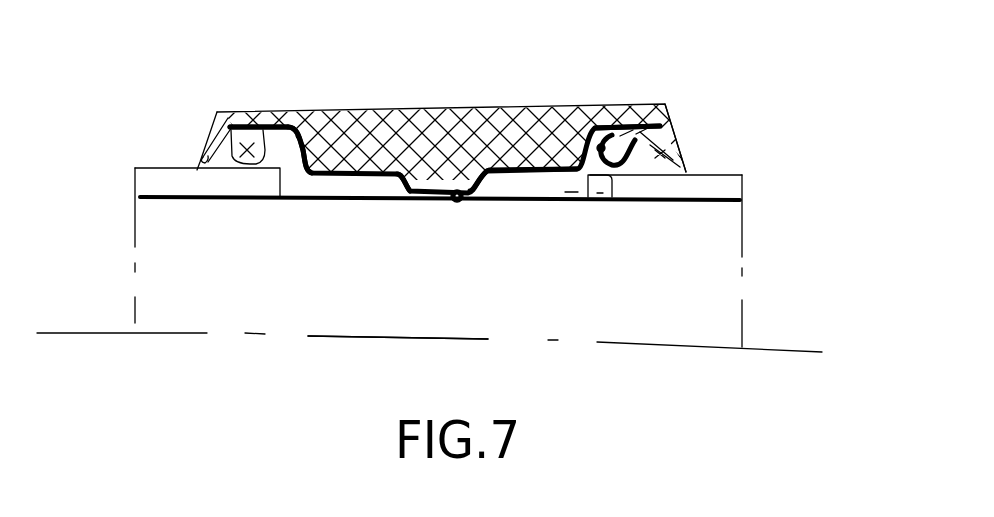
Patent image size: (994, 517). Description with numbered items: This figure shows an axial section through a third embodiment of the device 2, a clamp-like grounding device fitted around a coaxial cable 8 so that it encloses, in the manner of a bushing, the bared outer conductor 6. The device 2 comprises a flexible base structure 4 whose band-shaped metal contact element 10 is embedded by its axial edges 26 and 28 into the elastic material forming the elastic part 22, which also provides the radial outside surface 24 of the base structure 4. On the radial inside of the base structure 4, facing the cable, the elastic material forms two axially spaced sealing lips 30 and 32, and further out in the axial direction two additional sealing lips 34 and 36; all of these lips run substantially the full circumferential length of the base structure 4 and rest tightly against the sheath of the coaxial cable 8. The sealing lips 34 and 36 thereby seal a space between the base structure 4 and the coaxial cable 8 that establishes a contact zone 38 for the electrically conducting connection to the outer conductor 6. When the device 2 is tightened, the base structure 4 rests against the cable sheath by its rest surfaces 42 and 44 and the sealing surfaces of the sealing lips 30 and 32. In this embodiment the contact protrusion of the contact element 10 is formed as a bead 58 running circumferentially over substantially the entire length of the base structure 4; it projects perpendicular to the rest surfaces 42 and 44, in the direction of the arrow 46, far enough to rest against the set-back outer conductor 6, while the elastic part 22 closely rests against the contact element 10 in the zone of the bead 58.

The device 2 is at (695, 72).
The flexible base structure 4 is at (203, 126).
The outer conductor 6 is at (520, 160).
The coaxial cable 8 is at (745, 240).
The contact element 10 is at (380, 172).
The elastic part 22 is at (500, 120).
The radial outside surface 24 is at (335, 110).
The axial edge 26 is at (252, 125).
The axial edge 28 is at (633, 118).
The sealing lip 30 is at (283, 132).
The sealing lip 32 is at (618, 120).
The additional sealing lip 34 is at (202, 152).
The additional sealing lip 36 is at (685, 155).
The contact zone 38 is at (382, 192).
The rest surface 42 is at (237, 167).
The rest surface 44 is at (610, 173).
The arrow 46 is at (445, 348).
The bead 58 is at (444, 189).